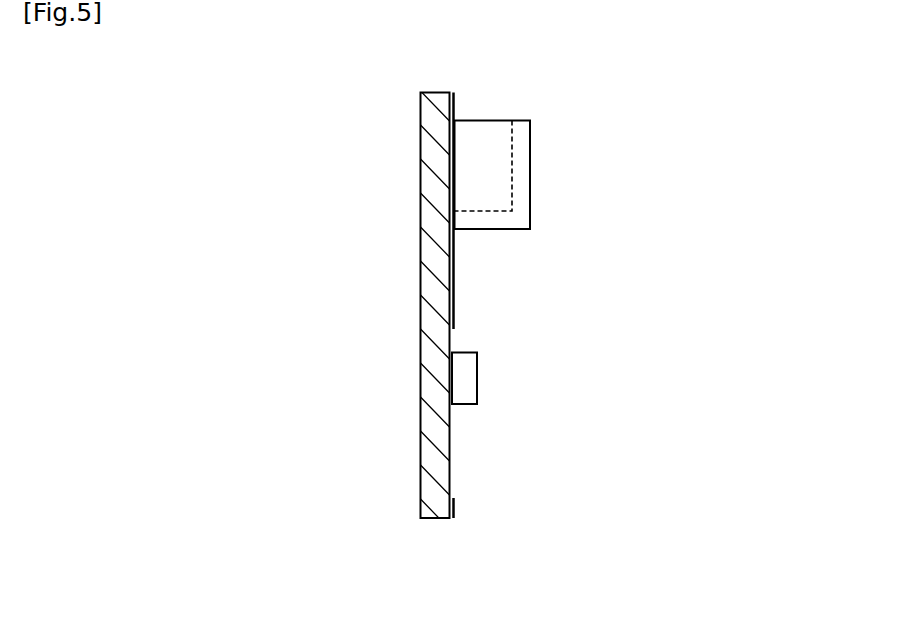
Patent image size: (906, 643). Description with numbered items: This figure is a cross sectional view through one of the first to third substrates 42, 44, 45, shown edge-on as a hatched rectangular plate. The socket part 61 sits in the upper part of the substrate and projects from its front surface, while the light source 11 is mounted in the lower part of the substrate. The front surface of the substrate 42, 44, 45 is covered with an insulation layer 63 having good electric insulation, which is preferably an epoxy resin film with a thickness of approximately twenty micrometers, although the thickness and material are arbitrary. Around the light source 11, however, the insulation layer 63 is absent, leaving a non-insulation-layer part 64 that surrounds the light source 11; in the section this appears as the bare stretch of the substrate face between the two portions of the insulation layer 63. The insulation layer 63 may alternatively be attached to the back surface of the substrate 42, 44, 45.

The first substrate 42 is at (413, 112).
The second substrate 44 is at (413, 112).
The third substrate 45 is at (413, 112).
The socket part 61 is at (502, 171).
The insulation layer 63 is at (457, 280).
The non-insulation-layer part 64 is at (453, 442).
The light source 11 is at (467, 375).